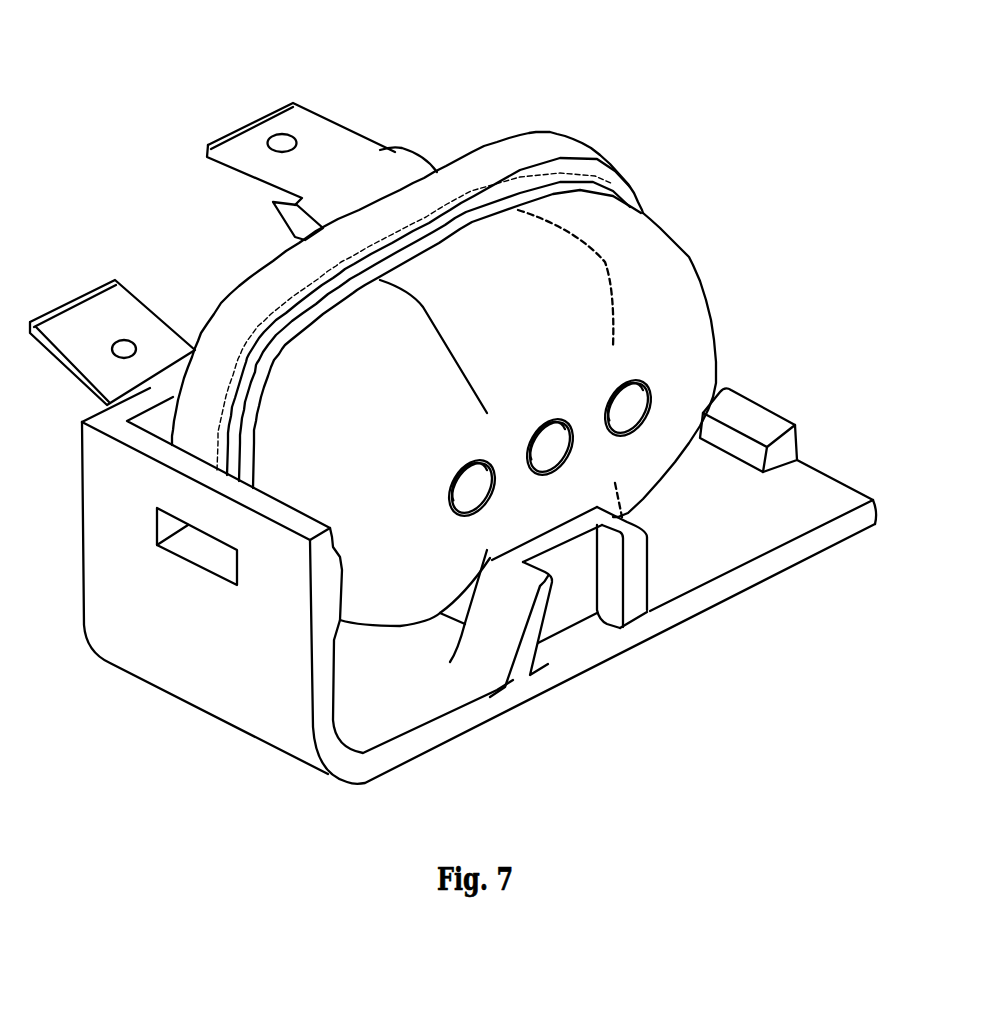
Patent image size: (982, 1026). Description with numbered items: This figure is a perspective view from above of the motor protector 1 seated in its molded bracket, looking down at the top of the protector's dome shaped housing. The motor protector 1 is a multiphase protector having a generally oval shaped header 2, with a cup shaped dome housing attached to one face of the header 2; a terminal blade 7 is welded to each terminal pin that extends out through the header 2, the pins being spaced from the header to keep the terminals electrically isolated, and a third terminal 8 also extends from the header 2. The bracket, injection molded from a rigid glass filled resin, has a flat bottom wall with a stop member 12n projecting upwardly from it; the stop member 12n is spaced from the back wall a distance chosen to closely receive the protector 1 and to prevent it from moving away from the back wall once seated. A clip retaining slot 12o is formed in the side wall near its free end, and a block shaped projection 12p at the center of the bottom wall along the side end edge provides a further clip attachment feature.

The motor protector 1 is at (710, 284).
The header 2 is at (518, 160).
The terminal blade 7 is at (295, 228).
The third terminal 8 is at (333, 157).
The stop member 12n is at (542, 540).
The clip retaining slot 12o is at (205, 555).
The block shaped projection 12p is at (747, 418).